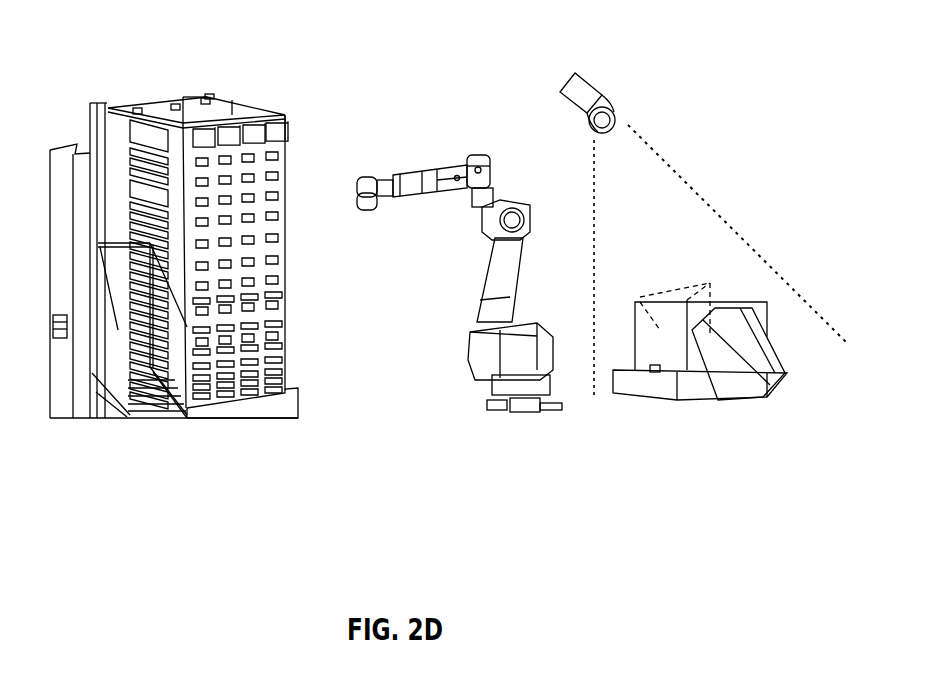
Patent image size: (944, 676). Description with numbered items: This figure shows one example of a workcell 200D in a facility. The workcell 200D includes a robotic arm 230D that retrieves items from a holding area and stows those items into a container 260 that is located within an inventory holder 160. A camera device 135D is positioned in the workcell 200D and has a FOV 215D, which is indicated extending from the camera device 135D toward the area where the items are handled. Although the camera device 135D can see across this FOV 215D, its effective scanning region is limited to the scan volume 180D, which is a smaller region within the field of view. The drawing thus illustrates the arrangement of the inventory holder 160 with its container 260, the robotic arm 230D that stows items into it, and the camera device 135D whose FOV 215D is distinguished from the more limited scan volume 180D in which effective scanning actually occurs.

The workcell 200D is at (423, 56).
The inventory holder 160 is at (195, 97).
The container 260 is at (295, 118).
The robotic arm 230D is at (387, 172).
The camera device 135D is at (598, 97).
The FOV 215D is at (669, 194).
The scan volume 180D is at (718, 295).